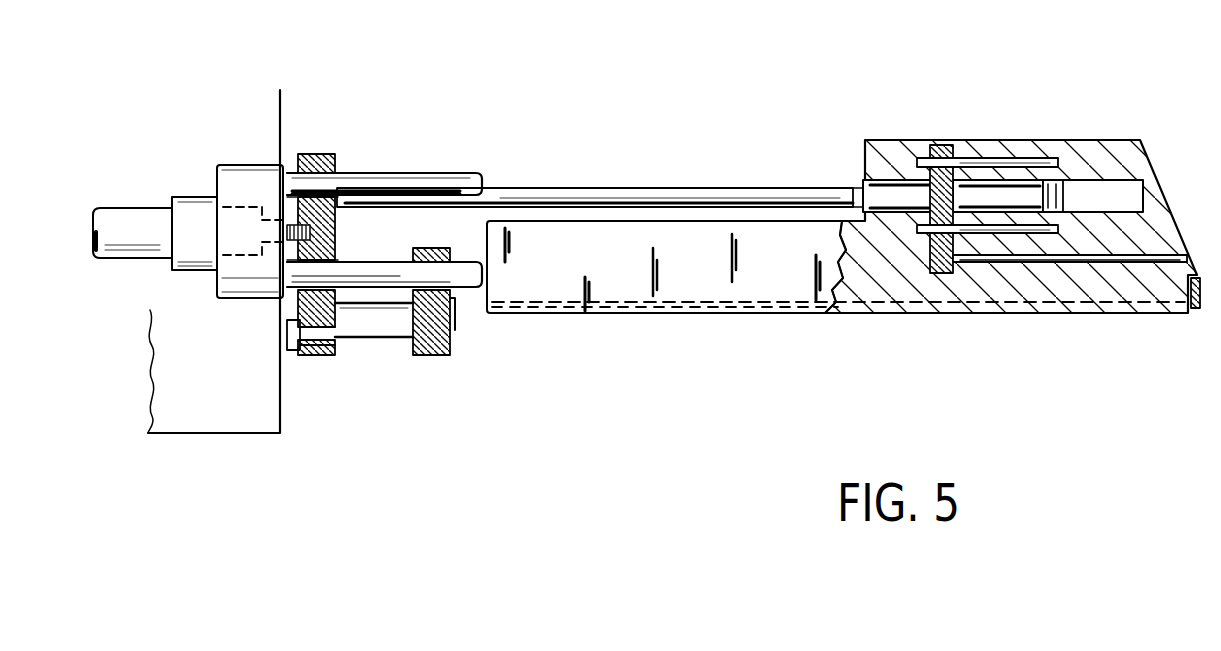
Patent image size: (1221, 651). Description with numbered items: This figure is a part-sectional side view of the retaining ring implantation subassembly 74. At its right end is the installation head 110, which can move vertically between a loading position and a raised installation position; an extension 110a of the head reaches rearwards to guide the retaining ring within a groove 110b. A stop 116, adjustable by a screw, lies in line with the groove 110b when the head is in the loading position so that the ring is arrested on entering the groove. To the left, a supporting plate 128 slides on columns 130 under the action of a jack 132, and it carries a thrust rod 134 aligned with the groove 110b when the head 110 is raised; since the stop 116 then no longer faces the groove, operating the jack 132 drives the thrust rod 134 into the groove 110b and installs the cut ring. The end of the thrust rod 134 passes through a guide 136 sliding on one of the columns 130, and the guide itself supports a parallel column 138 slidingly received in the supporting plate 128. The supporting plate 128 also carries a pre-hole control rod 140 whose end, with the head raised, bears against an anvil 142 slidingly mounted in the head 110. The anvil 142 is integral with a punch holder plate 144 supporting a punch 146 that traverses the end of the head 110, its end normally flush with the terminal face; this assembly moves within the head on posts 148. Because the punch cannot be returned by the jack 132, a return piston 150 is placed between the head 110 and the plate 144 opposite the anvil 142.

The piston assembly 74 is at (761, 225).
The installation head 110 is at (836, 253).
The extension 110a is at (675, 270).
The groove 110b is at (776, 305).
The stop 116 is at (1197, 310).
The supporting plate 128 is at (326, 152).
The columns 130 is at (470, 262).
The jack 132 is at (142, 222).
The thrust rod 134 is at (365, 304).
The guide 136 is at (453, 352).
The parallel column 138 is at (398, 337).
The pre-hole control rod 140 is at (640, 188).
The anvil 142 is at (862, 178).
The punch holder plate 144 is at (937, 275).
The punch 146 is at (1020, 268).
The posts 148 is at (1010, 160).
The return piston 150 is at (1062, 192).